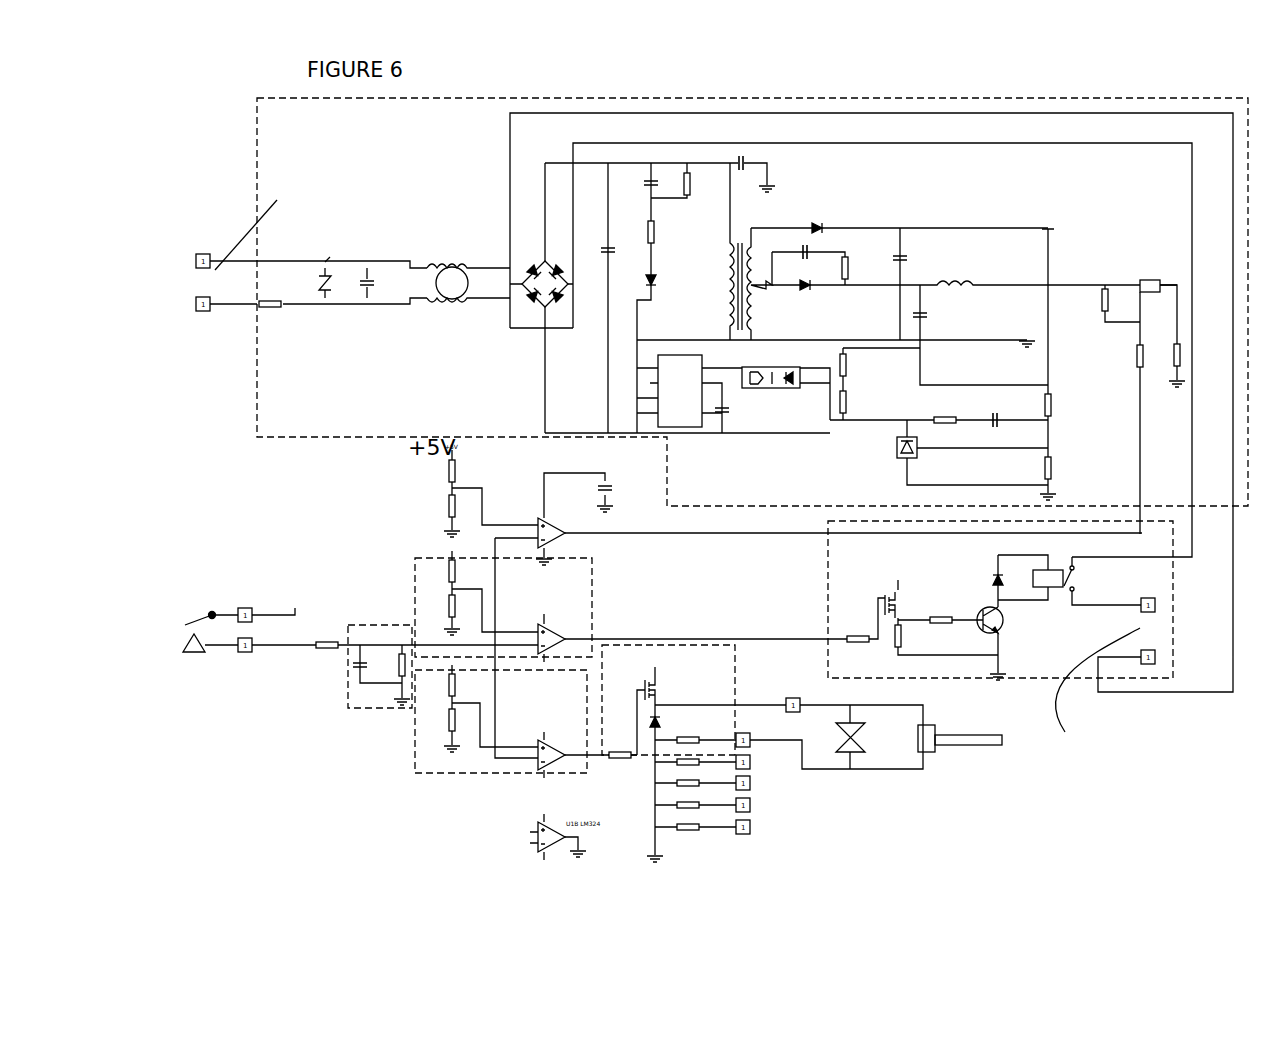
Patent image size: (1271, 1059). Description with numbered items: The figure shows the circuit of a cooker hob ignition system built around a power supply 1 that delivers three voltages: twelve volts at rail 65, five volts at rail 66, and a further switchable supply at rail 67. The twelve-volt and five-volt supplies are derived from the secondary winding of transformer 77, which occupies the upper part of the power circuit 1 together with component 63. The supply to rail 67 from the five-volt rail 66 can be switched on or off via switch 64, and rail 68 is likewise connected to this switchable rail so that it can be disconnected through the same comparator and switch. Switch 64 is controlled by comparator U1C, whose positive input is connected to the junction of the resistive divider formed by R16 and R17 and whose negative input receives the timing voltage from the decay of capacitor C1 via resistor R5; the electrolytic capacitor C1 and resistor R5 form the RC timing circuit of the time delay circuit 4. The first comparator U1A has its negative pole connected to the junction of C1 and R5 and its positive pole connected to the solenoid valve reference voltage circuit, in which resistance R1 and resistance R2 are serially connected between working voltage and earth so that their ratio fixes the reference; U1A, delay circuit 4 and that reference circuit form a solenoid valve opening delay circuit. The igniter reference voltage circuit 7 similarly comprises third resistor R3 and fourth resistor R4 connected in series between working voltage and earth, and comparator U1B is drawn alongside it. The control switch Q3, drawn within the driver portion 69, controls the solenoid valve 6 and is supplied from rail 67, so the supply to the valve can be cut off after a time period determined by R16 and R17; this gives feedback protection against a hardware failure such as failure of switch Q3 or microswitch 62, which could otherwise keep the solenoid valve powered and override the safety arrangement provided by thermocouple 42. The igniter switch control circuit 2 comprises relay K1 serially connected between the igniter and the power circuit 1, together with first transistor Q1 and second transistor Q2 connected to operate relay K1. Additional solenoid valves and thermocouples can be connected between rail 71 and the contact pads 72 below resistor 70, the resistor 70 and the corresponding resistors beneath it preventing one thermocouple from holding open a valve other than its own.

The power circuit 1 is at (318, 437).
The igniter switch control circuit 2 is at (827, 556).
The time delay circuit 4 is at (437, 772).
The solenoid valve 6 is at (852, 755).
The igniter reference voltage circuit 7 is at (592, 590).
The thermocouple 42 is at (957, 743).
The microswitch 62 is at (205, 603).
The optocoupler 63 is at (767, 388).
The switch 64 is at (1158, 293).
The twelve volt rail 65 is at (1053, 215).
The five volt rail 66 is at (1052, 268).
The V5 rail 67 is at (1167, 273).
The rail 68 is at (905, 580).
The output driver circuit 69 is at (653, 667).
The resistor 70 is at (677, 742).
The rail 71 is at (905, 702).
The output connectors 72 is at (745, 765).
The transformer 77 is at (760, 243).
The resistance R1 is at (448, 690).
The resistance R2 is at (448, 725).
The third resistor R3 is at (447, 571).
The fourth resistor R4 is at (447, 608).
The resistor R5 is at (398, 686).
The resistor R16 is at (447, 475).
The resistor R17 is at (447, 510).
The first capacitance C1 is at (357, 657).
The first comparator U1A is at (532, 773).
The operational amplifier U1B is at (545, 632).
The comparator U1C is at (555, 545).
The first transistor Q1 is at (875, 608).
The second transistor Q2 is at (1000, 630).
The control switch Q3 is at (668, 690).
The relay K1 is at (1049, 605).